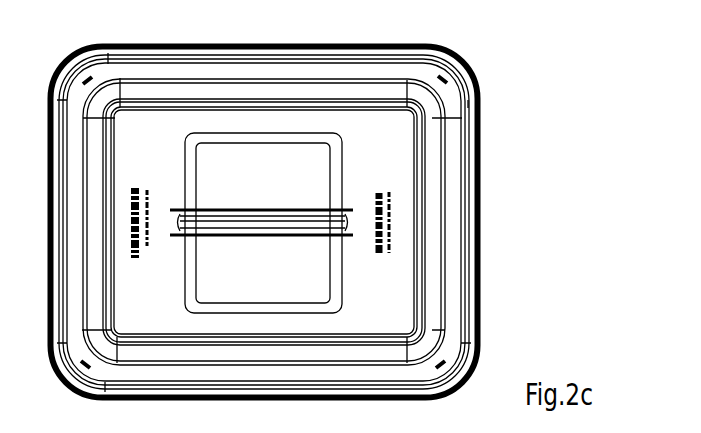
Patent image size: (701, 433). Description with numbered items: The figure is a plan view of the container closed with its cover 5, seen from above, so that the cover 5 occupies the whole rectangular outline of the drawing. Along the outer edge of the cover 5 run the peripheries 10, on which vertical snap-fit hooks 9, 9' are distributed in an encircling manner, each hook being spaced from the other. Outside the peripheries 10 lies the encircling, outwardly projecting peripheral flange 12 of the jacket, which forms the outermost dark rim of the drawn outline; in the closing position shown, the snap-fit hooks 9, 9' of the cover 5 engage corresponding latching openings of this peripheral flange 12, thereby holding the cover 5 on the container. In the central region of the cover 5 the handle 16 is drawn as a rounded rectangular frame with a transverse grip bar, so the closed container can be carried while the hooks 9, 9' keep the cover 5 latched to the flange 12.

The cover 5 is at (398, 136).
The snap-fit hook 9 is at (302, 222).
The snap-fit hook 9' is at (297, 224).
The periphery of the cover 10 is at (342, 53).
The peripheral flange 12 is at (487, 81).
The handle 16 is at (325, 210).